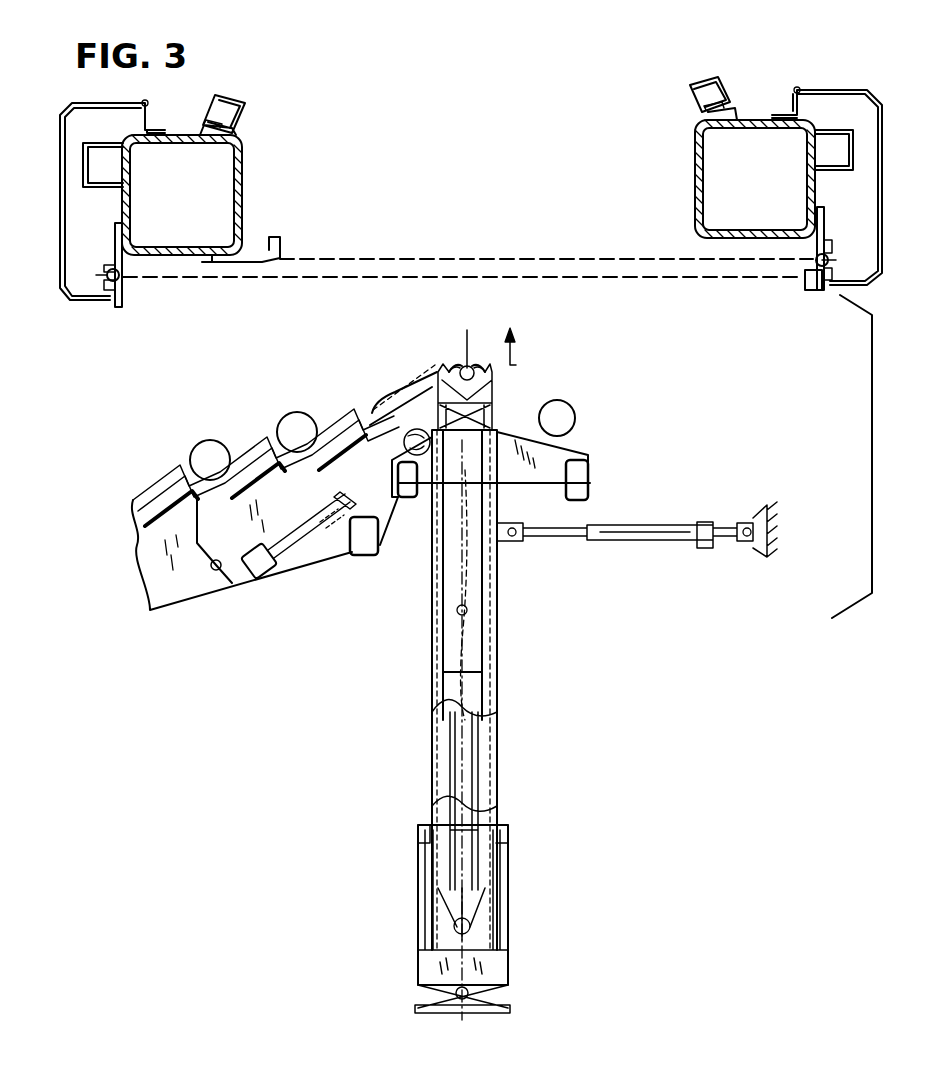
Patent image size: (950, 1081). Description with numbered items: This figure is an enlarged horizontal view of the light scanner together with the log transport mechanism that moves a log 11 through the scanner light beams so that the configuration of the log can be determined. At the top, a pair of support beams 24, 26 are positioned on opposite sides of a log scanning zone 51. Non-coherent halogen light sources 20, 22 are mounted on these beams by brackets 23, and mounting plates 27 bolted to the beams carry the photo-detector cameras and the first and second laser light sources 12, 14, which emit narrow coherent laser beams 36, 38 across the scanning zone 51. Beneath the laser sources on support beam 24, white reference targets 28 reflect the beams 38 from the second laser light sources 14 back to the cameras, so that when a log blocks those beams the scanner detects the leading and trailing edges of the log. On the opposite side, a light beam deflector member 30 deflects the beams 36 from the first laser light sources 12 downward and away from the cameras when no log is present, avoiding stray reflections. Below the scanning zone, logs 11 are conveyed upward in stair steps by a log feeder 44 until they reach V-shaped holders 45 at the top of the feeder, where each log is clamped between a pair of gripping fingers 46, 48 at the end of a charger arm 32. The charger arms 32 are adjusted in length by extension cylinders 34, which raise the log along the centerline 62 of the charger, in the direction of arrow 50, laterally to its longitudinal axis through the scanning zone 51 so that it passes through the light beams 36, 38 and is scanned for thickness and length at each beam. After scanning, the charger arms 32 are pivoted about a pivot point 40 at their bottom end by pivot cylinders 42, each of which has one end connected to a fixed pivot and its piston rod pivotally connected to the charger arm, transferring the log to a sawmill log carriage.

The log 11 is at (299, 412).
The first laser light sources 12 is at (834, 262).
The second laser light sources 14 is at (103, 275).
The non-coherent light sources 20 is at (697, 100).
The non-coherent light sources 22 is at (245, 117).
The brackets 23 is at (203, 130).
The support beam 24 is at (695, 163).
The support beam 26 is at (243, 165).
The mounting plates 27 is at (114, 240).
The reference targets 28 is at (805, 285).
The light beam deflector member 30 is at (262, 252).
The charger arms 32 is at (498, 602).
The extension cylinders 34 is at (475, 762).
The laser light beams 36 is at (627, 257).
The laser light beams 38 is at (623, 280).
The pivot point 40 is at (470, 992).
The pivot cylinders 42 is at (645, 538).
The log feeder 44 is at (252, 443).
The V-shaped holders 45 is at (497, 380).
The gripping finger 46 is at (438, 366).
The gripping finger 48 is at (478, 368).
The arrow 50 is at (516, 365).
The log scanning zone 51 is at (466, 256).
The centerline 62 is at (465, 340).